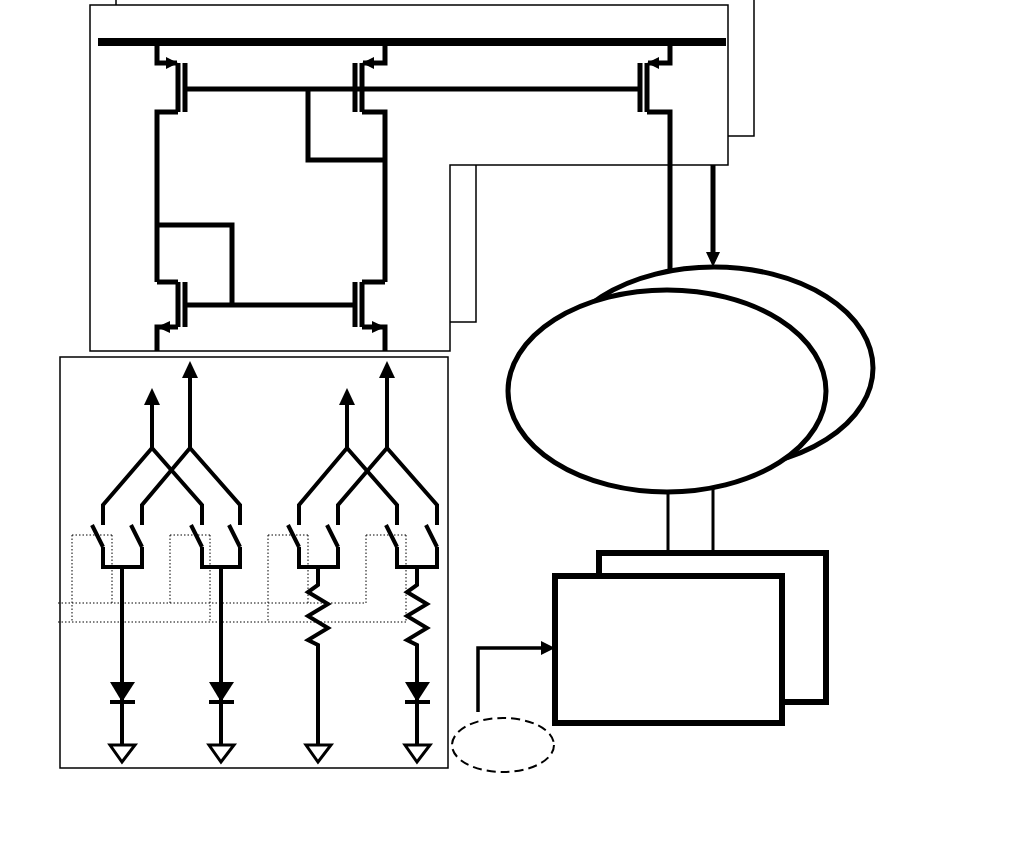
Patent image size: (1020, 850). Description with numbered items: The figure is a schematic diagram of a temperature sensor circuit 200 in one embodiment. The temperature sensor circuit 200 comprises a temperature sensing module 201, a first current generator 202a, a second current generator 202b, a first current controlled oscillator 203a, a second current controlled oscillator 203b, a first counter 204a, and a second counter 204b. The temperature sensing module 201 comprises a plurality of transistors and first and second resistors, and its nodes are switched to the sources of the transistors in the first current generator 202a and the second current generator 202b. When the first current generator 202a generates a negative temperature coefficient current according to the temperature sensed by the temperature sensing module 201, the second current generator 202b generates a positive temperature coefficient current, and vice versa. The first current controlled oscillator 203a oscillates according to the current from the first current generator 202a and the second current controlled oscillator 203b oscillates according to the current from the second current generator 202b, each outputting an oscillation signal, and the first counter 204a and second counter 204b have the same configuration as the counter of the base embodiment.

The temperature sensor circuit 200 is at (868, 84).
The temperature sensing module 201 is at (448, 522).
The first current generator 202a is at (450, 268).
The second current generator 202b is at (477, 214).
The first current controlled oscillator 203a is at (790, 322).
The second current controlled oscillator 203b is at (760, 270).
The first counter 204a is at (782, 612).
The second counter 204b is at (826, 578).